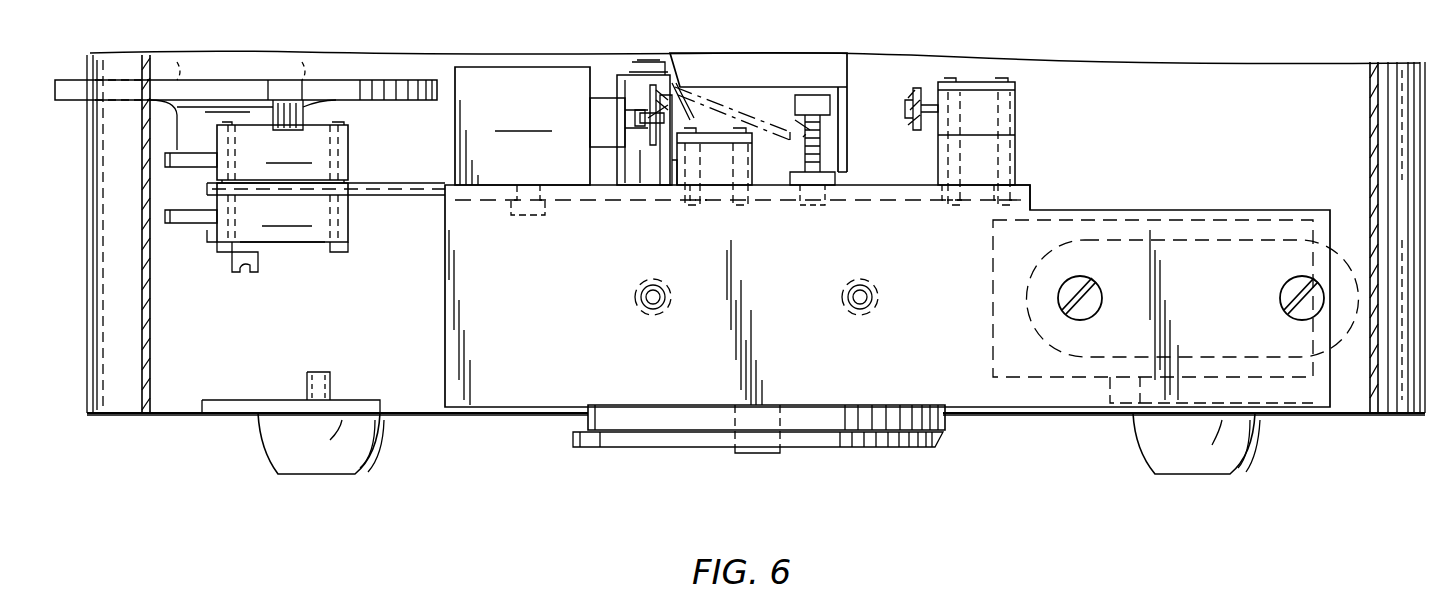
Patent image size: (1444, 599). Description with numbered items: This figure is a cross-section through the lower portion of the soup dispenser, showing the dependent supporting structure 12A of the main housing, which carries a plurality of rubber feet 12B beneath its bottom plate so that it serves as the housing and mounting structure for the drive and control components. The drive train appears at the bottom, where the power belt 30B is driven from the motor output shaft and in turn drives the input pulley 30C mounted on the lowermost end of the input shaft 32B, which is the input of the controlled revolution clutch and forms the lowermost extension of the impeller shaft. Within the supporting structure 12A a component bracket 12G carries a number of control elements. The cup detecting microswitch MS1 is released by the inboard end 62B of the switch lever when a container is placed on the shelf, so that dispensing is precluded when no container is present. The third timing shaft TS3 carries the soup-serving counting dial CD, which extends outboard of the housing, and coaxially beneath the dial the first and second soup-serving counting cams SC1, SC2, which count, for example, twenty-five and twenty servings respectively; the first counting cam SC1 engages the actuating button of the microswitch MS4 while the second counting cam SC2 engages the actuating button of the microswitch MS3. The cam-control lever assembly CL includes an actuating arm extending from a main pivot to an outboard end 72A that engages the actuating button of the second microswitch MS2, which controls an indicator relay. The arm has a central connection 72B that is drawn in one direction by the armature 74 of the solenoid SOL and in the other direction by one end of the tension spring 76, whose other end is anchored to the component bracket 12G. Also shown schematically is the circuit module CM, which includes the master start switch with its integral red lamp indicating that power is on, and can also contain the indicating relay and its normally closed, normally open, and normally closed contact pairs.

The dependent supporting structure 12A is at (1370, 150).
The rubber feet 12B is at (280, 455).
The component bracket 12G is at (386, 198).
The soup-serving counting dial CD is at (176, 93).
The first soup-serving counting cam SC1 is at (176, 160).
The second soup-serving counting cam SC2 is at (168, 225).
The microswitch MS4 is at (282, 152).
The microswitch MS3 is at (277, 217).
The second microswitch MS2 is at (716, 165).
The cup detecting microswitch MS1 is at (980, 115).
The third timing shaft TS3 is at (255, 272).
The solenoid SOL is at (522, 141).
The armature 74 is at (628, 110).
The cam-control lever assembly CL is at (645, 100).
The central connection 72B is at (653, 120).
The outboard end 72A is at (664, 160).
The tension spring 76 is at (745, 115).
The inboard end 62B is at (915, 88).
The power belt 30B is at (640, 380).
The input pulley 30C is at (874, 448).
The input shaft 32B is at (764, 455).
The circuit module CM is at (1030, 360).